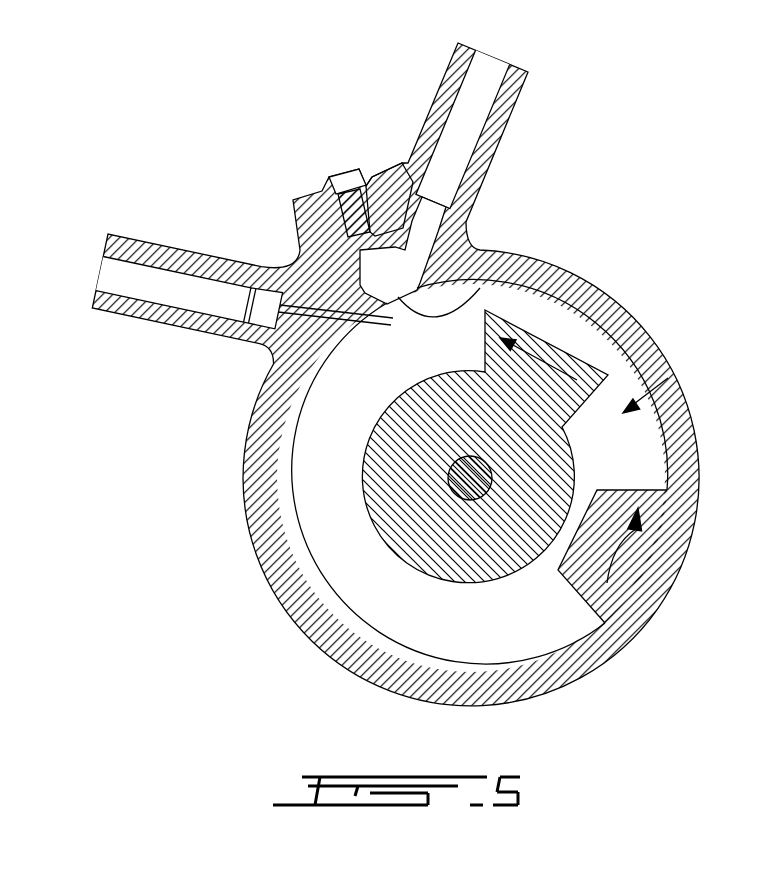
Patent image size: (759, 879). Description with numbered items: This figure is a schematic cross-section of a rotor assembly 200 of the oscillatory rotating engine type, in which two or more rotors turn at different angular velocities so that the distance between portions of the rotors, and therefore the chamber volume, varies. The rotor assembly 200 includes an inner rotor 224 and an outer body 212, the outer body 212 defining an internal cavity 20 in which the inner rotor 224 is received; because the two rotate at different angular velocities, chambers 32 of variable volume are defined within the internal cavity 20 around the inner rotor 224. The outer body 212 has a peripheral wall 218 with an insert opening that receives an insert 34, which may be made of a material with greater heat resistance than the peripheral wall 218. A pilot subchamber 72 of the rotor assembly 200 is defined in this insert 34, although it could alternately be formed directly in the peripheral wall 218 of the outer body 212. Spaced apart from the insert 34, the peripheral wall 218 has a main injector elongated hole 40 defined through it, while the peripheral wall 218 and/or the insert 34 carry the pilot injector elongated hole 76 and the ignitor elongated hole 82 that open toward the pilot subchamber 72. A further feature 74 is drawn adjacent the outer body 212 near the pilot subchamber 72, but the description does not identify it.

The rotor assembly 200 is at (160, 164).
The main injector elongated hole 40 is at (123, 276).
The ignitor elongated hole 82 is at (357, 212).
The insert 34 is at (378, 178).
The pilot injector elongated hole 76 is at (487, 75).
The pilot subchamber 72 is at (385, 270).
The flap 74 is at (510, 260).
The inner rotor 224 is at (590, 362).
The internal cavity 20 is at (668, 378).
The chambers 32 is at (630, 453).
The peripheral wall 218 is at (267, 437).
The outer body 212 is at (248, 581).